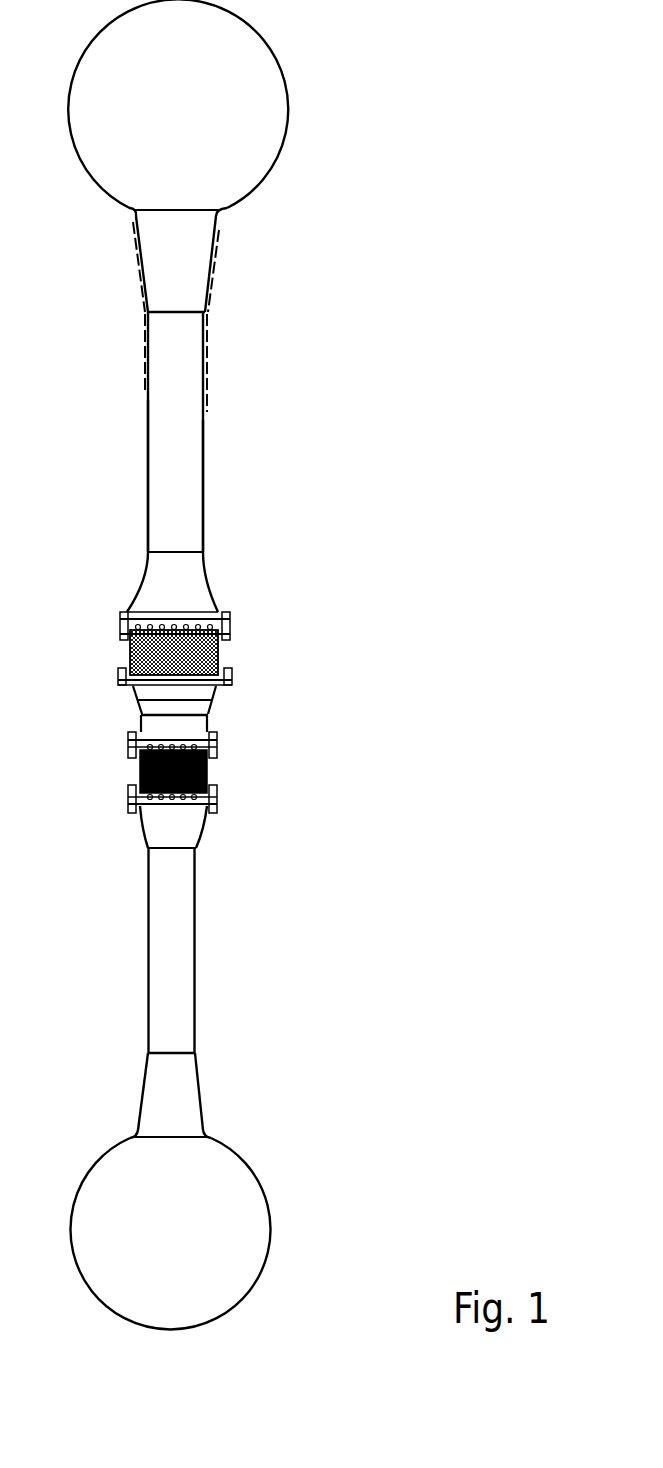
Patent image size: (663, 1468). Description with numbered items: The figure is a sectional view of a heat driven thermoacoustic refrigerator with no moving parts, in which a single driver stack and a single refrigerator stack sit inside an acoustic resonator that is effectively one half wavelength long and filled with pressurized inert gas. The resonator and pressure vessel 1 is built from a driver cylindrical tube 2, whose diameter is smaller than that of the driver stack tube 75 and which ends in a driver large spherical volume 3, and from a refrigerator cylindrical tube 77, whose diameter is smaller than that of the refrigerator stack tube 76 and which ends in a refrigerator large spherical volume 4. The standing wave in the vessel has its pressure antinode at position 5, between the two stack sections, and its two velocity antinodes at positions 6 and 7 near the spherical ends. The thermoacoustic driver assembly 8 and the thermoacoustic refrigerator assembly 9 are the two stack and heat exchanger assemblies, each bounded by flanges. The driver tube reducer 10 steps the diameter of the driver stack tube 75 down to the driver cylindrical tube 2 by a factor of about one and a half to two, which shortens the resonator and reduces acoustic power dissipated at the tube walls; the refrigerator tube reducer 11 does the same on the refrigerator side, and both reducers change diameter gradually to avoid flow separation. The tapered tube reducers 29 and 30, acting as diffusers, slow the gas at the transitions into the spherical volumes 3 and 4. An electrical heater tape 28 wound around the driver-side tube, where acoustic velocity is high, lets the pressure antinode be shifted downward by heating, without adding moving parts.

The resonator and pressure vessel 1 is at (125, 592).
The driver cylindrical tube 2 is at (204, 465).
The driver large spherical volume 3 is at (277, 165).
The refrigerator large spherical volume 4 is at (252, 1167).
The pressure antinode position 5 is at (158, 708).
The velocity antinode position 6 is at (170, 287).
The velocity antinode position 7 is at (165, 1073).
The thermoacoustic driver assembly 8 is at (241, 612).
The thermoacoustic refrigerator assembly 9 is at (226, 810).
The driver tube reducer 10 is at (205, 582).
The refrigerator tube reducer 11 is at (200, 828).
The electrical heater tape 28 is at (210, 342).
The tapered tube reducer 29 is at (215, 252).
The tapered tube reducer 30 is at (197, 1090).
The driver stack tube 75 is at (220, 662).
The refrigerator stack tube 76 is at (208, 775).
The refrigerator cylindrical tube 77 is at (195, 977).